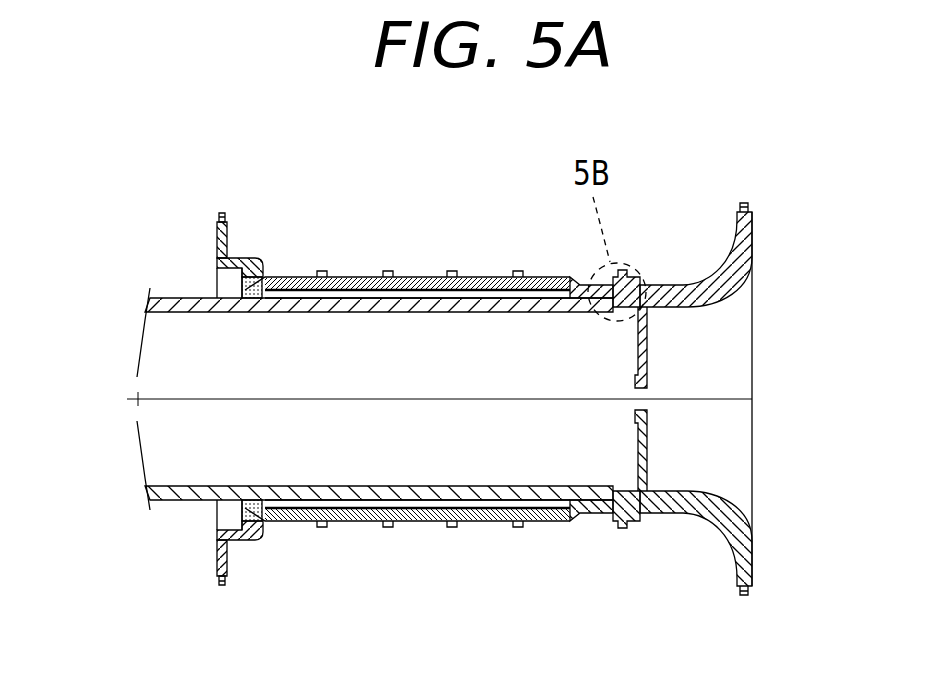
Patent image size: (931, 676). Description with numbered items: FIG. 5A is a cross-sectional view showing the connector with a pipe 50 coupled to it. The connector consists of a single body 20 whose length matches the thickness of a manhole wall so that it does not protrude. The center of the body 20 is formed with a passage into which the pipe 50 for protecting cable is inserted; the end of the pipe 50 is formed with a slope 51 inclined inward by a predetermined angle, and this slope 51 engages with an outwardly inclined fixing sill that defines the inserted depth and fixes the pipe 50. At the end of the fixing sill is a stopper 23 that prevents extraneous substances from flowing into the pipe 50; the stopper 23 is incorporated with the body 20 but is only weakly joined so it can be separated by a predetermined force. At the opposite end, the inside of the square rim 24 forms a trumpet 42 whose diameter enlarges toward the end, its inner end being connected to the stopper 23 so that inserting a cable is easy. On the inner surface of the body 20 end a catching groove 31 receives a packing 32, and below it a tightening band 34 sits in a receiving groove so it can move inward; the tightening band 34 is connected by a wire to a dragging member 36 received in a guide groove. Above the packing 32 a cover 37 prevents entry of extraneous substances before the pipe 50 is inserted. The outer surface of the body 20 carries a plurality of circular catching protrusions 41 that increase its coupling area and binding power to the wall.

The body 20 is at (421, 266).
The stopper 23 is at (652, 338).
The square rim 24 is at (720, 260).
The catching groove 31 is at (270, 266).
The packing 32 is at (215, 285).
The tightening band 34 is at (283, 277).
The dragging member 36 is at (480, 276).
The cover 37 is at (217, 287).
The circular catching protrusions 41 is at (514, 276).
The trumpet 42 is at (745, 497).
The pipe 50 is at (160, 503).
The slope 51 is at (603, 488).